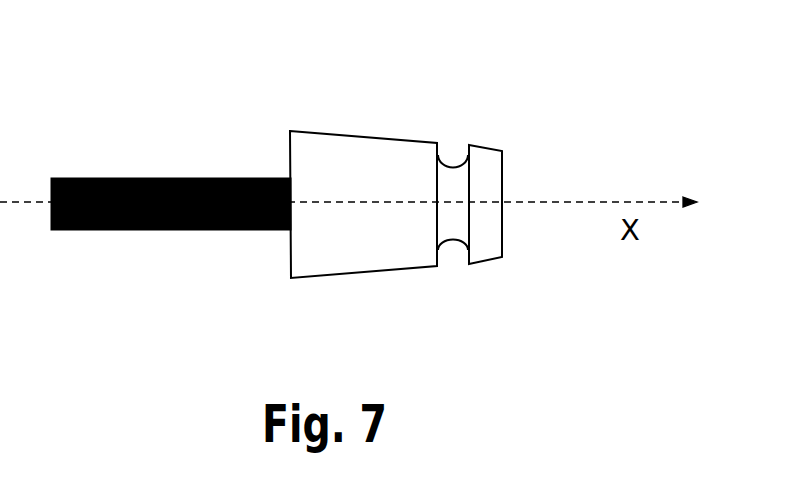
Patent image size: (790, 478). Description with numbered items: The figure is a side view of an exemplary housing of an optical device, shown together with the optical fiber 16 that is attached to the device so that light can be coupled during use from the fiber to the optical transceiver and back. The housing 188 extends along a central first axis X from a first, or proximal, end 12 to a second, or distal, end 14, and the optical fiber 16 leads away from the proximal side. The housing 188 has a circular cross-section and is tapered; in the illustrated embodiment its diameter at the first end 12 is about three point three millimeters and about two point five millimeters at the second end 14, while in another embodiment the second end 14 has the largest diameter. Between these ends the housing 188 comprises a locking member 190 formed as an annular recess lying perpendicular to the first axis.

The optical fiber 16 is at (108, 178).
The first end 12 is at (430, 149).
The housing 188 is at (403, 138).
The locking member 190 is at (458, 166).
The second end 14 is at (502, 164).